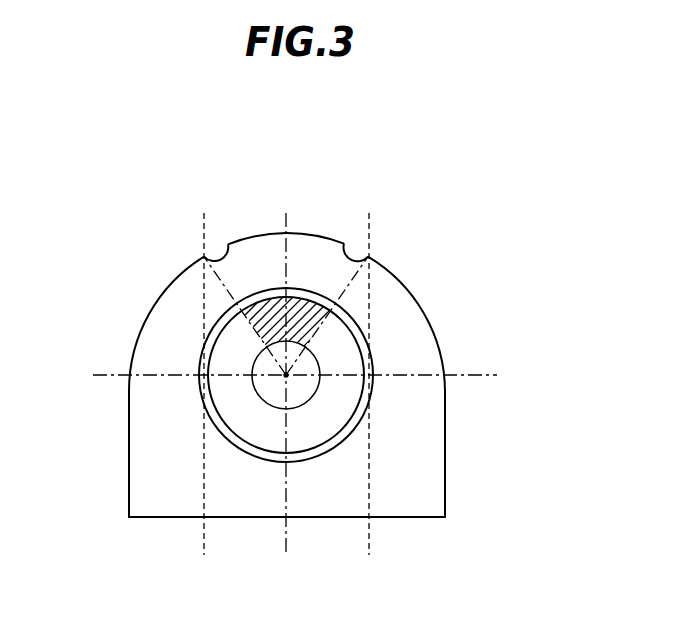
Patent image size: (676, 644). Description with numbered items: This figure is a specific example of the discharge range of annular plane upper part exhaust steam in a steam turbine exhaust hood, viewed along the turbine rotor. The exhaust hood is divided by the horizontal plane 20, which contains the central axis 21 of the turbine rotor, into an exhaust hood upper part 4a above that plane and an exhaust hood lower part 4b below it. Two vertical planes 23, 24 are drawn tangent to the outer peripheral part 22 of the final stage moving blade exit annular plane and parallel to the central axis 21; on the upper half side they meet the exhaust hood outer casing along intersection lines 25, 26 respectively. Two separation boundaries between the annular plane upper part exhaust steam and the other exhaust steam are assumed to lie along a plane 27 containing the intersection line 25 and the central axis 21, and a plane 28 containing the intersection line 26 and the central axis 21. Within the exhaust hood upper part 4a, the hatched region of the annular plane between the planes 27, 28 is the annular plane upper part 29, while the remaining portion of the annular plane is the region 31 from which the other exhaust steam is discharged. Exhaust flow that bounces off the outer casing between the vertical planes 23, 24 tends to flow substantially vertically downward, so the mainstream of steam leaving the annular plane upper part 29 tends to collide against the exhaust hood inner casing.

The exhaust hood upper part 4a is at (424, 325).
The exhaust hood lower part 4b is at (140, 463).
The horizontal plane 20 is at (478, 377).
The central axis 21 is at (286, 375).
The outer peripheral part 22 is at (264, 447).
The vertical plane 23 is at (204, 546).
The vertical plane 24 is at (372, 542).
The intersection line 25 is at (228, 245).
The intersection line 26 is at (345, 244).
The plane 27 is at (218, 281).
The plane 28 is at (350, 282).
The annular plane upper part 29 is at (298, 298).
The region other than the annular plane upper part 31 is at (313, 432).